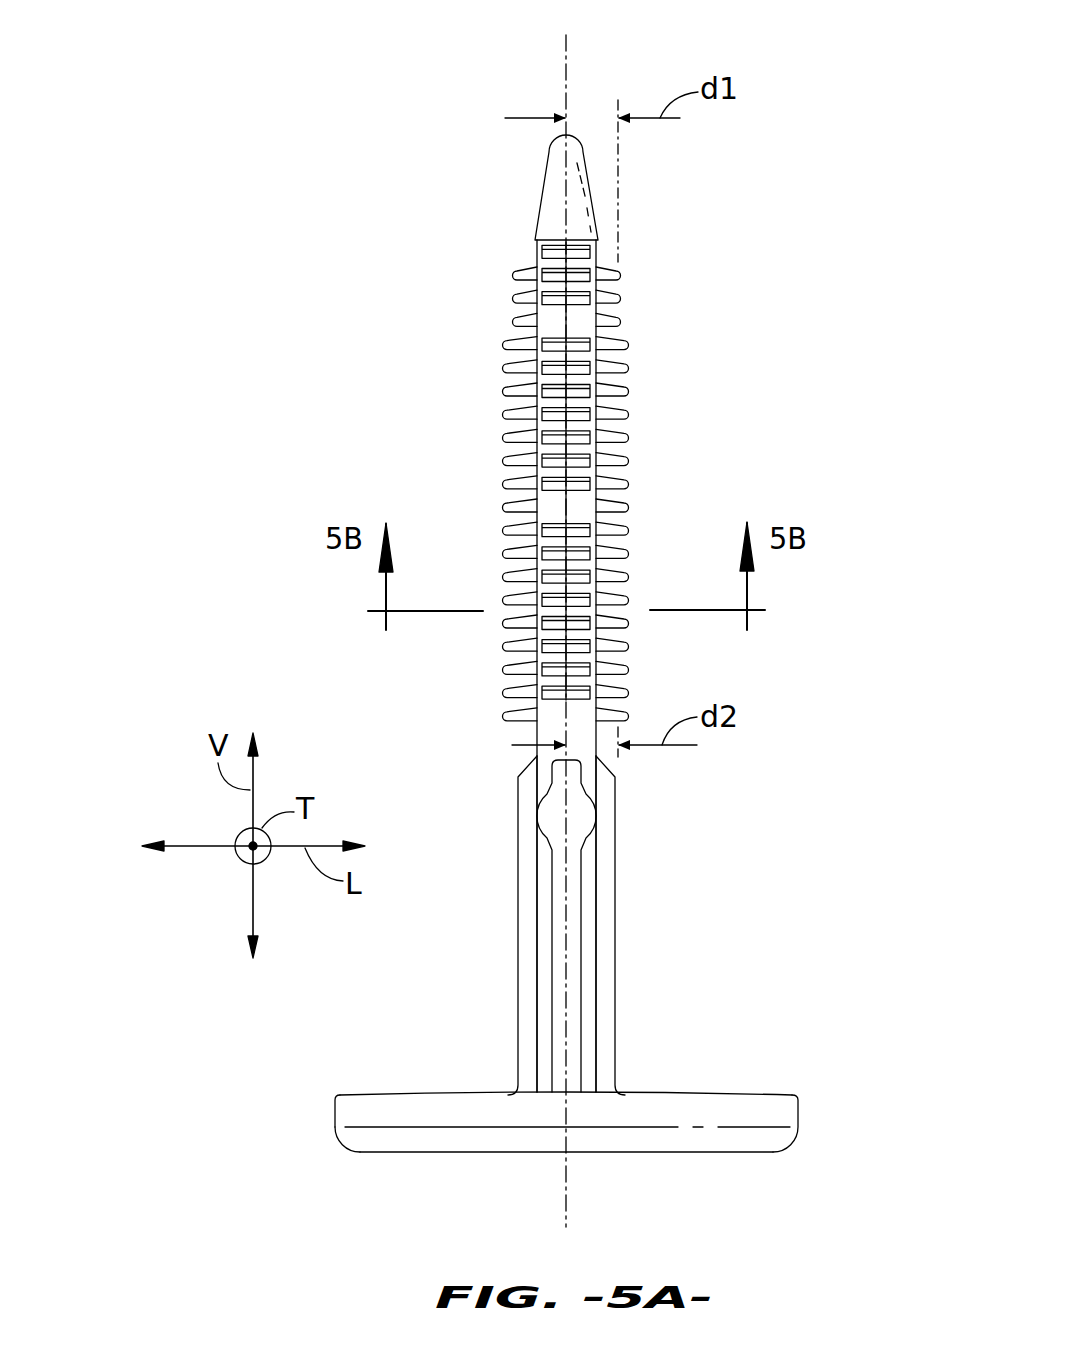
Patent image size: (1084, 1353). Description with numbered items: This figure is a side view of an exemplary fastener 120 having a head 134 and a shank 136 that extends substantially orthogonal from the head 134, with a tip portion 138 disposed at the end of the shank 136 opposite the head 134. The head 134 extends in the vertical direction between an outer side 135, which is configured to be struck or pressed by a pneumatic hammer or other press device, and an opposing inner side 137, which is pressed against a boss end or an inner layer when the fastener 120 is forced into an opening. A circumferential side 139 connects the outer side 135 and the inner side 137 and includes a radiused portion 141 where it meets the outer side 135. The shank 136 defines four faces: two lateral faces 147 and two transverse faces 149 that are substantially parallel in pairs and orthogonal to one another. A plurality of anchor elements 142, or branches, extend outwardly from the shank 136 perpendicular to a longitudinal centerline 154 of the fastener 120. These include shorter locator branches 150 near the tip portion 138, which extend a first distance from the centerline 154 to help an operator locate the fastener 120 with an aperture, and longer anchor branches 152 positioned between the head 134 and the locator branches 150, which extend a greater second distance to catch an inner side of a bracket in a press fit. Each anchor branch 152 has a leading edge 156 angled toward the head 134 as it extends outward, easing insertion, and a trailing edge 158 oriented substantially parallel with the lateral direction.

The fastener 120 is at (765, 190).
The longitudinal centerline 154 is at (566, 72).
The tip portion 138 is at (547, 167).
The anchor elements 142 is at (494, 565).
The locator branches 150 is at (513, 320).
The anchor branches 152 is at (504, 462).
The leading edge 156 is at (620, 448).
The trailing edge 158 is at (620, 462).
The transverse faces 149 is at (529, 731).
The shank 136 is at (535, 757).
The lateral faces 147 is at (546, 760).
The head 134 is at (799, 1108).
The inner side 137 is at (735, 1093).
The circumferential side 139 is at (333, 1110).
The radiused portion 141 is at (345, 1148).
The outer side 135 is at (688, 1153).